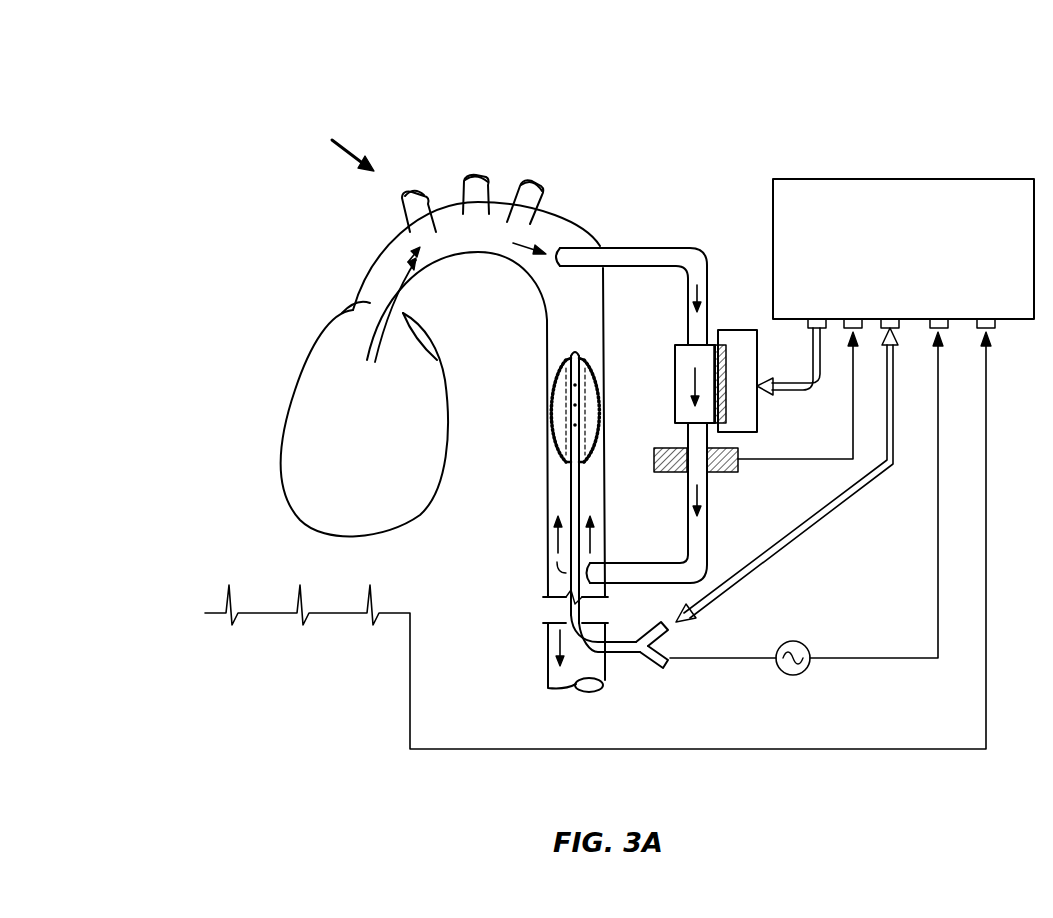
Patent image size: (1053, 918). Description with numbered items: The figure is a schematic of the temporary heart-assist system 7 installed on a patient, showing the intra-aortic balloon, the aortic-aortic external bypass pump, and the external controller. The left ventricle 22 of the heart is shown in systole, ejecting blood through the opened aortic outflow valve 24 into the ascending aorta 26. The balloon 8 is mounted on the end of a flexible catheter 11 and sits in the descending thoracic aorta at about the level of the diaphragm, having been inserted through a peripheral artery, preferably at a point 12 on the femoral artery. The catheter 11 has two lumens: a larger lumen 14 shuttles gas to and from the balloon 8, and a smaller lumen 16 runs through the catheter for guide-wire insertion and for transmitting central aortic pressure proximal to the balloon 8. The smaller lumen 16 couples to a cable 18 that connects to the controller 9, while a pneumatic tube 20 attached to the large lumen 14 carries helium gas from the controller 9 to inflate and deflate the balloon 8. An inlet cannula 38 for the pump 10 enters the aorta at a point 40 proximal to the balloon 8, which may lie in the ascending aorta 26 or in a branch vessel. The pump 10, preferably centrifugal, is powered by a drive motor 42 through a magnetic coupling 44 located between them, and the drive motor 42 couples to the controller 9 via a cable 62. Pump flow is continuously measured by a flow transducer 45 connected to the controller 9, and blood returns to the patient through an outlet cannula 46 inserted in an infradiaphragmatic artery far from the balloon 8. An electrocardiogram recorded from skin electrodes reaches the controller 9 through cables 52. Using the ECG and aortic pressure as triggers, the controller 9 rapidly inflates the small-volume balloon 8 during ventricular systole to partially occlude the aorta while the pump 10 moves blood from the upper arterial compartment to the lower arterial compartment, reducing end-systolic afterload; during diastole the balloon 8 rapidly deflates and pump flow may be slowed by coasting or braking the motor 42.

The temporary heart-assist system 7 is at (343, 141).
The balloon 8 is at (555, 436).
The controller 9 is at (890, 180).
The aortic bypass blood pump 10 is at (675, 380).
The catheter 11 is at (575, 480).
The point on the femoral artery 12 is at (605, 655).
The larger lumen 14 is at (658, 625).
The smaller lumen 16 is at (665, 665).
The cable 18 is at (890, 660).
The pneumatic tube 20 is at (805, 535).
The left ventricle 22 is at (290, 465).
The aortic outflow valve 24 is at (345, 312).
The ascending aorta 26 is at (390, 232).
The inlet cannula 38 is at (660, 248).
The insertion point for inlet cannula 40 is at (580, 245).
The drive motor 42 is at (728, 330).
The magnetic coupling 44 is at (735, 378).
The flow transducer 45 is at (718, 470).
The outlet cannula 46 is at (710, 500).
The cables 52 is at (440, 752).
The cable 62 is at (793, 393).